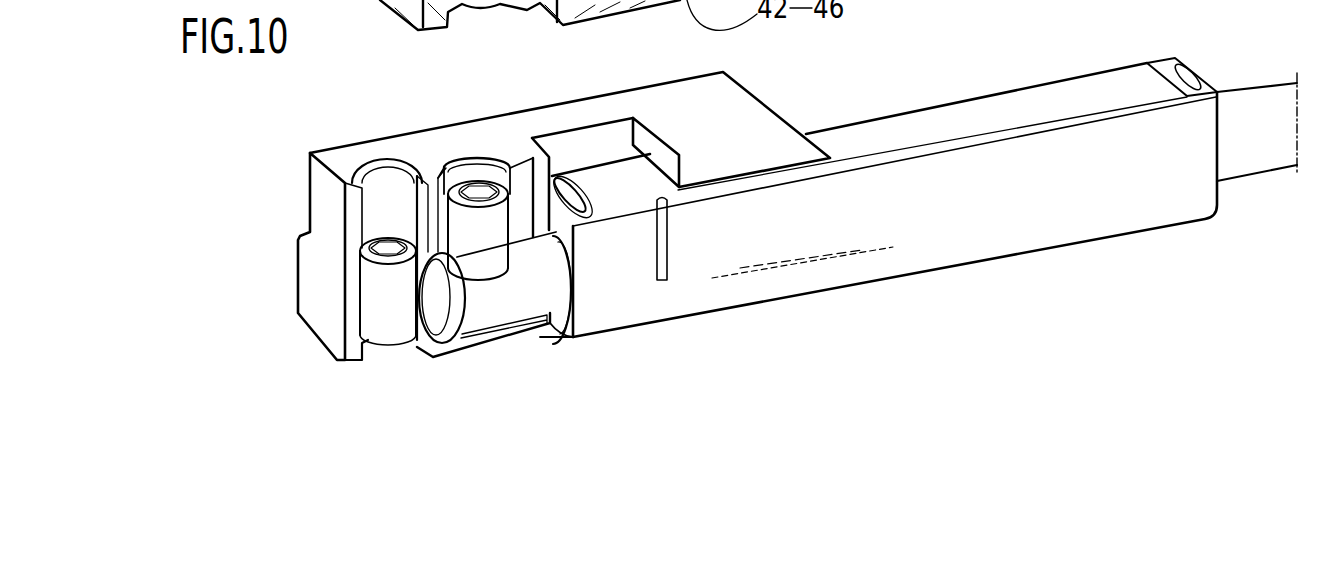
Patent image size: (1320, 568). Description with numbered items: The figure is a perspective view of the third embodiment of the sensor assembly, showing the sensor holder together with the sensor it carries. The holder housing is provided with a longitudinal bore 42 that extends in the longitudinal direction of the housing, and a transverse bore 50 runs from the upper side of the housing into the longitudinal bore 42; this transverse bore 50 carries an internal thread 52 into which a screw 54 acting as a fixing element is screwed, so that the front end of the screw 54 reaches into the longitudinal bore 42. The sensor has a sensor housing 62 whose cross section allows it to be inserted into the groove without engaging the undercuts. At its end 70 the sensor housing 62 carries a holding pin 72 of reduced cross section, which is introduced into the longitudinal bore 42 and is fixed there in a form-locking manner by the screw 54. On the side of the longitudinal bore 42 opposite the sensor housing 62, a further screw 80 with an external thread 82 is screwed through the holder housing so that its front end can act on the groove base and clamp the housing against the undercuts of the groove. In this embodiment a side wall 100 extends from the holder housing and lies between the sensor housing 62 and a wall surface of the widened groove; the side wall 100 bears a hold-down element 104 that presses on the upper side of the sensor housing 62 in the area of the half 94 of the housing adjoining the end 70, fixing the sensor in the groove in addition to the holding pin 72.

The longitudinal bore 42 is at (560, 337).
The transverse bore 50 is at (484, 170).
The internal thread 52 is at (460, 173).
The screw 54 is at (527, 158).
The sensor housing 62 is at (866, 243).
The end 70 is at (587, 298).
The holding pin 72 is at (489, 310).
The screw 80 is at (368, 290).
The external thread 82 is at (363, 345).
The half of the housing 94 is at (740, 257).
The side wall 100 is at (587, 153).
The hold-down element 104 is at (758, 155).